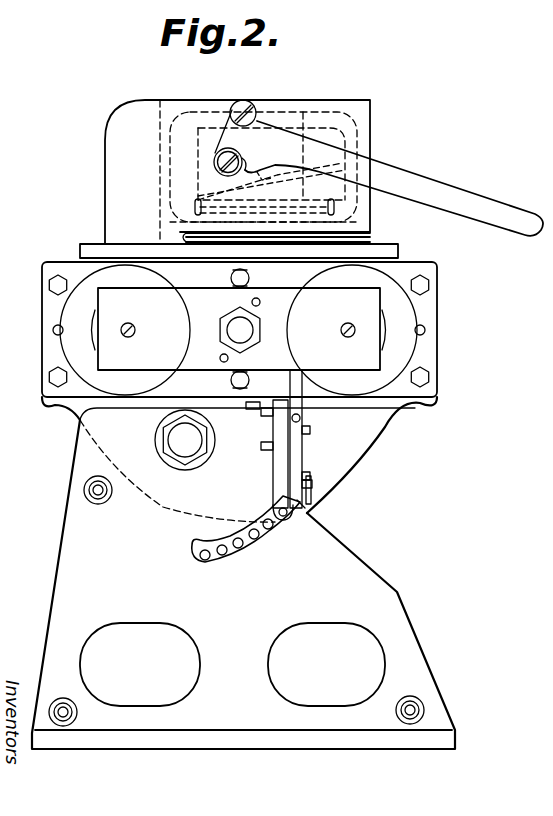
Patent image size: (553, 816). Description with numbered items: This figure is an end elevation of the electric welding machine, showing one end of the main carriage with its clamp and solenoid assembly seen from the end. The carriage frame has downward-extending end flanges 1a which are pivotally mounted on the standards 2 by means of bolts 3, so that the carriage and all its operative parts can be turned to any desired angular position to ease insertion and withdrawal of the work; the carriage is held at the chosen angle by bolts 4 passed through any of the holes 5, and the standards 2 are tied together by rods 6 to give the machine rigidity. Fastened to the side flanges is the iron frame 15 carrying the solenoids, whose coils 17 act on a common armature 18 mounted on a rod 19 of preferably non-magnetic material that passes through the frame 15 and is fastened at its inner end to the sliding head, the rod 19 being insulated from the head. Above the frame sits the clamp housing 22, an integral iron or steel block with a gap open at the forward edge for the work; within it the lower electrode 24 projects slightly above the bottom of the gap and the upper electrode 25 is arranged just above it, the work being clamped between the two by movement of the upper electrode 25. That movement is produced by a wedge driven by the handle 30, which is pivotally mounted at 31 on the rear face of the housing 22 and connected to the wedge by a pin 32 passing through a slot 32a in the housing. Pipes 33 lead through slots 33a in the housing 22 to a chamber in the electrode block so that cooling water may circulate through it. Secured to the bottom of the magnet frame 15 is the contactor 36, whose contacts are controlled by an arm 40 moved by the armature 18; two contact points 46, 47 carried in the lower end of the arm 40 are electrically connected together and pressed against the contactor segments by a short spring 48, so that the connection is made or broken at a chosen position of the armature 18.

The end flange 1a is at (386, 425).
The standard 2 is at (243, 578).
The bolt 3 is at (185, 440).
The bolt 4 is at (281, 522).
The hole 5 is at (215, 563).
The rod 6 is at (98, 500).
The iron frame 15 is at (48, 268).
The coil 17 is at (78, 310).
The armature 18 is at (239, 329).
The rod 19 is at (255, 330).
The housing 22 is at (133, 110).
The lower electrode 24 is at (215, 246).
The upper electrode 25 is at (183, 237).
The handle 30 is at (416, 178).
The pivot 31 is at (232, 110).
The pin 32 is at (213, 157).
The slot 32a is at (261, 176).
The pipe 33 is at (194, 208).
The slot 33a is at (400, 238).
The contactor 36 is at (278, 460).
The arm 40 is at (304, 450).
The contact point 46 is at (312, 496).
The contact point 47 is at (300, 506).
The spring 48 is at (312, 482).